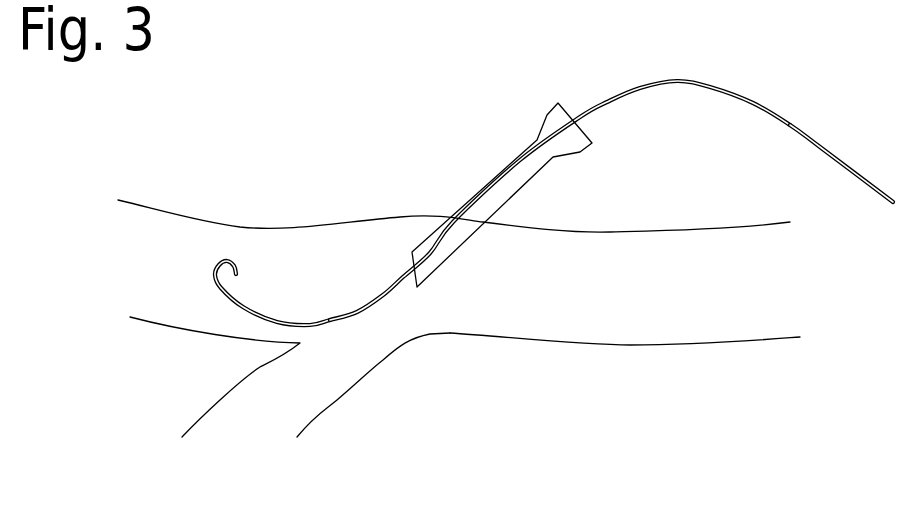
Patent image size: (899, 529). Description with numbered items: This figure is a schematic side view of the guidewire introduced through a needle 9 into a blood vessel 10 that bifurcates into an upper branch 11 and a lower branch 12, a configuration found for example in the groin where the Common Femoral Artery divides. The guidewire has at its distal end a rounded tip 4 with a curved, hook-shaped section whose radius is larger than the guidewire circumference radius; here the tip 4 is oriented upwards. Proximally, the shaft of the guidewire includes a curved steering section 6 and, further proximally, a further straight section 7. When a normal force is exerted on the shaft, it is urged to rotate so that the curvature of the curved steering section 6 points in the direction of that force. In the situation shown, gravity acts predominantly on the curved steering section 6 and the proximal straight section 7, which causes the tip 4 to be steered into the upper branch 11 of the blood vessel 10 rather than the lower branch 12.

The rounded tip 4 is at (217, 267).
The curved steering section 6 is at (665, 84).
The further straight section 7 is at (863, 187).
The needle 9 is at (468, 202).
The blood vessel 10 is at (633, 363).
The upper branch 11 is at (175, 206).
The lower branch 12 is at (397, 381).